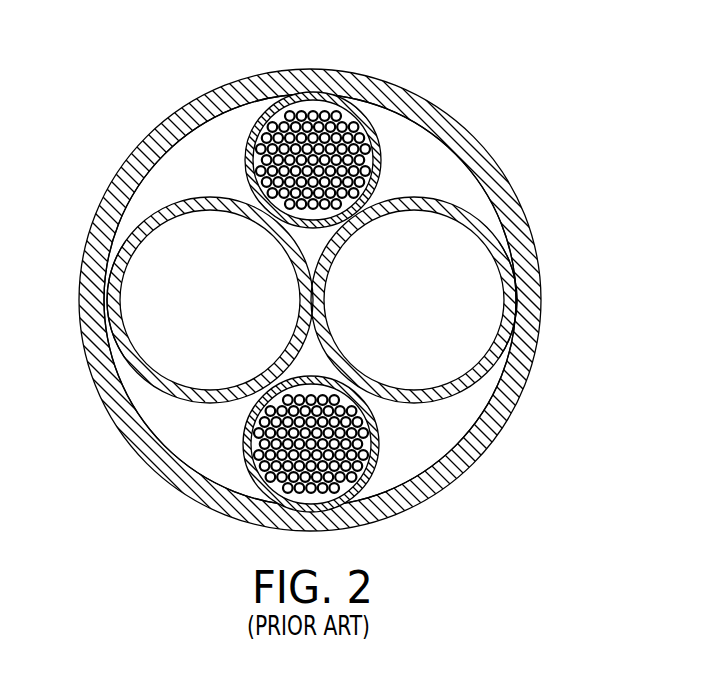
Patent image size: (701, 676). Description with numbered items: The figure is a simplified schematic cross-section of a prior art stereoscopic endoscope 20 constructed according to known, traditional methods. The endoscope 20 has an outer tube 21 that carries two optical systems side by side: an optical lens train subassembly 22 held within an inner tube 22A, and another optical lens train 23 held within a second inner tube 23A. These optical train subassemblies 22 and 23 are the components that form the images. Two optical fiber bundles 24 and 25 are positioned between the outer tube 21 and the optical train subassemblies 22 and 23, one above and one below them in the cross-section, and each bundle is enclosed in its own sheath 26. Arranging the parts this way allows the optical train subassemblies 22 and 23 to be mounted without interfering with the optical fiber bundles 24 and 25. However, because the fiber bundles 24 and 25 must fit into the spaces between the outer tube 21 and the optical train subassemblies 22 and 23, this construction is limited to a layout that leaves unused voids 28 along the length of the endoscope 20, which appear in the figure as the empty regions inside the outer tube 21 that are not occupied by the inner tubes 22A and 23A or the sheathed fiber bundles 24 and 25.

The stereoscopic endoscope 20 is at (518, 157).
The outer tube 21 is at (522, 380).
The optical lens train subassembly 22 is at (192, 311).
The inner tube 22A is at (110, 302).
The optical lens train 23 is at (404, 311).
The inner tube 23A is at (520, 289).
The optical fiber bundle 24 is at (283, 92).
The optical fiber bundle 25 is at (258, 455).
The sheath 26 is at (352, 116).
The unused voids 28 is at (433, 442).